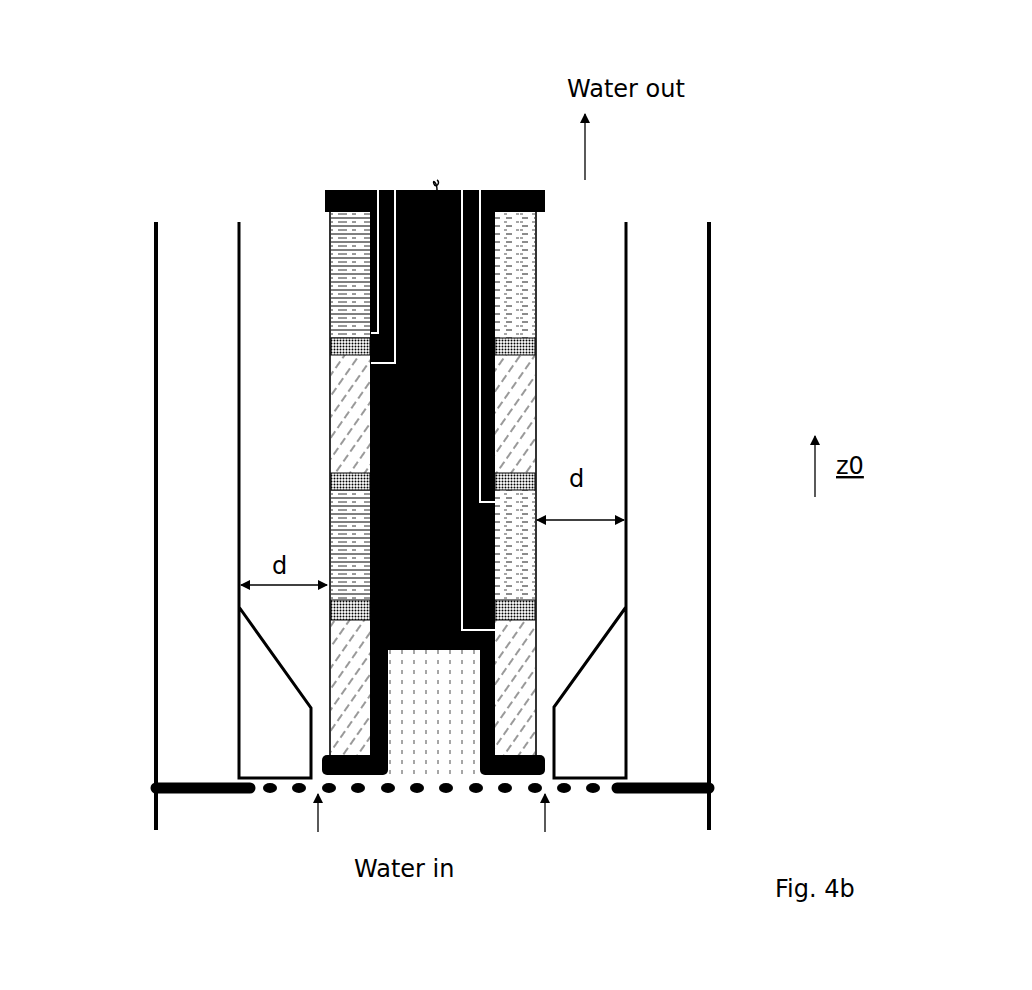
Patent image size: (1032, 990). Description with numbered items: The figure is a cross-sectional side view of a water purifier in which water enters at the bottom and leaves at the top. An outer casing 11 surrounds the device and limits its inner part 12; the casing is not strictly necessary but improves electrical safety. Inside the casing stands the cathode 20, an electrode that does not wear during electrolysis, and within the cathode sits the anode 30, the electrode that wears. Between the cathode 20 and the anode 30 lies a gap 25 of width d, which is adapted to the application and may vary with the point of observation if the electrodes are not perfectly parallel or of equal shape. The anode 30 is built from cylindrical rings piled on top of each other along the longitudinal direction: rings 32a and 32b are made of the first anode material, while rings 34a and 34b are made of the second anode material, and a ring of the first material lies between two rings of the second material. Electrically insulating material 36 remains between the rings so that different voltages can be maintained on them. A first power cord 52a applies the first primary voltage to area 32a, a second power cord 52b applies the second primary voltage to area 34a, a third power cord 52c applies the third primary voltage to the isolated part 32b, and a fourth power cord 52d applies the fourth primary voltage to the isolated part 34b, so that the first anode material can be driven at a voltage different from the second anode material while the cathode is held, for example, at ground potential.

The outer casing 11 is at (156, 222).
The cathode 20 is at (239, 222).
The inner part 12 is at (426, 356).
The gap 25 is at (431, 460).
The anode 30 is at (316, 308).
The first area of the anode comprising first anode material 32a is at (330, 232).
The second part of the anode comprising first anode material 32b is at (528, 548).
The second area of the anode comprising second anode material 34a is at (330, 411).
The second part of the anode comprising second anode material 34b is at (524, 638).
The electrically insulating material 36 is at (535, 345).
The first power cord 52a is at (378, 190).
The second power cord 52b is at (395, 190).
The third power cord 52c is at (480, 190).
The fourth power cord 52d is at (462, 190).